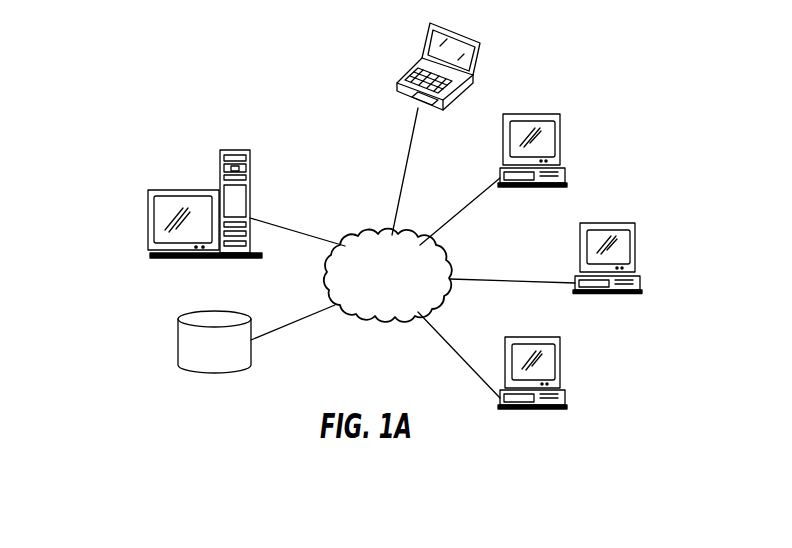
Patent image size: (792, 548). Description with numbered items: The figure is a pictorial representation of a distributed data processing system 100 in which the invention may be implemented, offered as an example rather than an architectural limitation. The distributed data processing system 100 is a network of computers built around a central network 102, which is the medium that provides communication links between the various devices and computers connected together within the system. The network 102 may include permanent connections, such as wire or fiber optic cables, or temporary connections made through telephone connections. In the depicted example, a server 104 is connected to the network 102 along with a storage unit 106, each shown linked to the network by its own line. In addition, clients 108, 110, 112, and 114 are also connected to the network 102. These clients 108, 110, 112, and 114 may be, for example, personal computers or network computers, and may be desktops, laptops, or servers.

The distributed data processing system 100 is at (329, 120).
The network 102 is at (408, 289).
The server 104 is at (220, 170).
The storage unit 106 is at (178, 348).
The client 108 is at (562, 148).
The client 110 is at (637, 255).
The client 112 is at (562, 368).
The client 114 is at (480, 63).